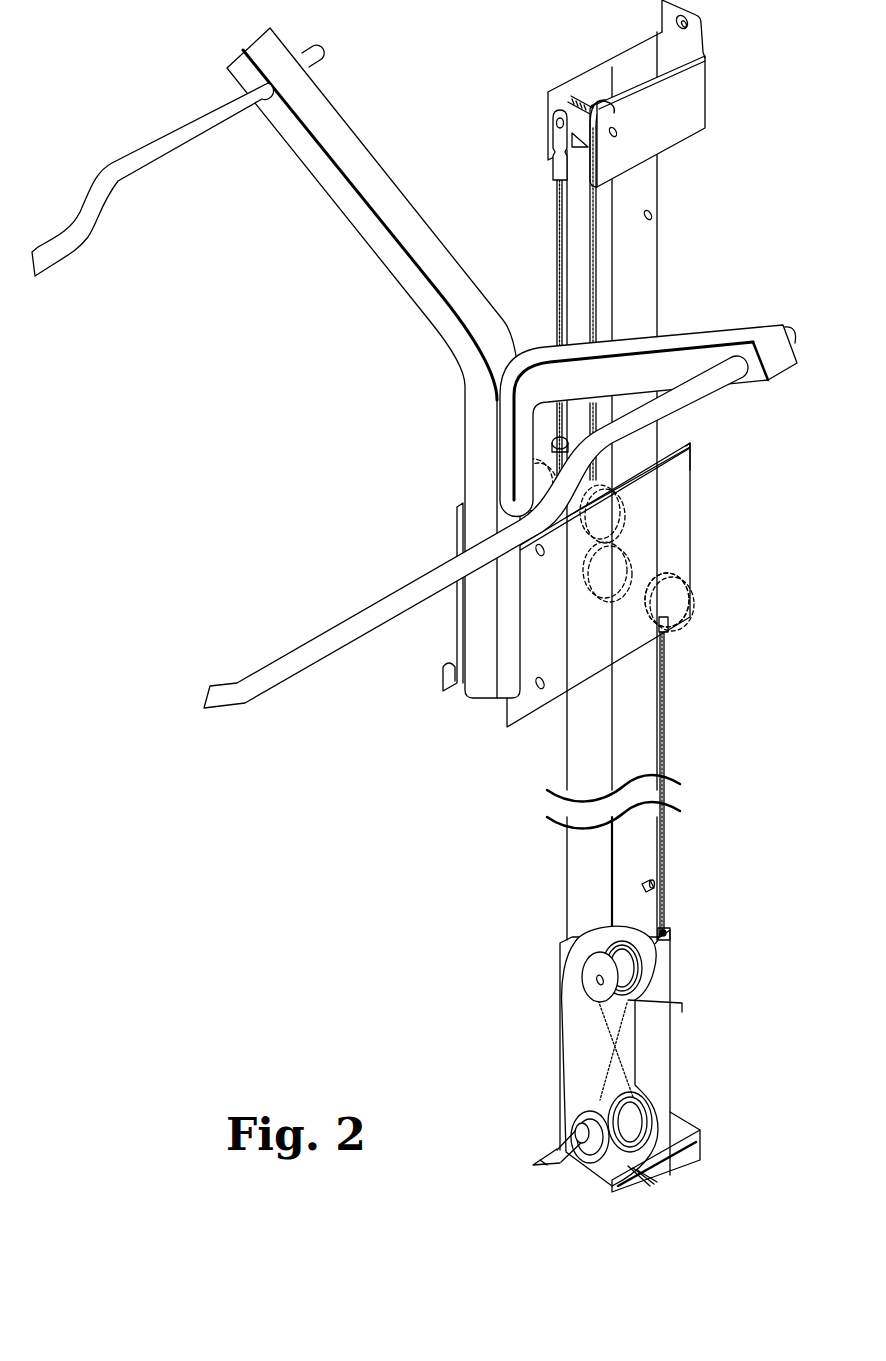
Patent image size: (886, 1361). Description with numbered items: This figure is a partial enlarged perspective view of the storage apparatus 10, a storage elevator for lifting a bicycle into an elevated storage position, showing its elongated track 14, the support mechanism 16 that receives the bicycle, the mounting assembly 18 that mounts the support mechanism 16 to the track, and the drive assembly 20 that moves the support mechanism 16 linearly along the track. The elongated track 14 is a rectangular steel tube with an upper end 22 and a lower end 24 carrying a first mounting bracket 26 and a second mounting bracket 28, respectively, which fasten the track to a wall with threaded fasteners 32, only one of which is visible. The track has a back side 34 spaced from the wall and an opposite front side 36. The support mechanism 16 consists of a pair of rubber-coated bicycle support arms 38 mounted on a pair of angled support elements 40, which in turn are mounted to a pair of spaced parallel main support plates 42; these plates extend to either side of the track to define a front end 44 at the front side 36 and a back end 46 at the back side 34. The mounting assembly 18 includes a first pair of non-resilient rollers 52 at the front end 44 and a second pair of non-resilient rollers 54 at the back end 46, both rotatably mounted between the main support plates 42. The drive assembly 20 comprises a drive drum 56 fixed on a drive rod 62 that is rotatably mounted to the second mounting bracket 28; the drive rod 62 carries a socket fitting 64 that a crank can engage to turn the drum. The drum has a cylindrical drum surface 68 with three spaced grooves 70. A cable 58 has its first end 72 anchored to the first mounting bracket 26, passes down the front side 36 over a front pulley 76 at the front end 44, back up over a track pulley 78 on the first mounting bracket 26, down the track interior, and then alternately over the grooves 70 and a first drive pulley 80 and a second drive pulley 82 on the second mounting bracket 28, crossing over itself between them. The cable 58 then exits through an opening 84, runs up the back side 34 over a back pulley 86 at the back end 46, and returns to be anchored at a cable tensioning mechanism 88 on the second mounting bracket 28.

The storage apparatus 10 is at (755, 60).
The elongated track 14 is at (618, 517).
The support mechanism 16 is at (573, 580).
The mounting assembly 18 is at (692, 569).
The drive assembly 20 is at (596, 1028).
The upper end 22 is at (648, 192).
The lower end 24 is at (648, 906).
The first mounting bracket 26 is at (697, 118).
The second mounting bracket 28 is at (678, 1120).
The threaded fastener 32 is at (688, 30).
The back side 34 is at (663, 748).
The front side 36 is at (578, 884).
The bicycle support arm 38 is at (138, 157).
The angled support element 40 is at (288, 135).
The main support plate 42 is at (457, 532).
The front end 44 is at (577, 663).
The back end 46 is at (694, 450).
The first pair of non-resilient rollers 52 is at (512, 478).
The second pair of non-resilient rollers 54 is at (631, 570).
The drive drum 56 is at (582, 1160).
The cable 58 is at (557, 240).
The drive rod 62 is at (570, 1140).
The socket fitting 64 is at (550, 1153).
The cylindrical drum surface 68 is at (604, 1152).
The grooves 70 is at (654, 1189).
The first end 72 is at (553, 125).
The front pulley 76 is at (565, 447).
The track pulley 78 is at (603, 103).
The first drive pulley 80 is at (587, 977).
The second drive pulley 82 is at (643, 958).
The opening 84 is at (666, 932).
The back pulley 86 is at (670, 632).
The cable tensioning mechanism 88 is at (682, 938).